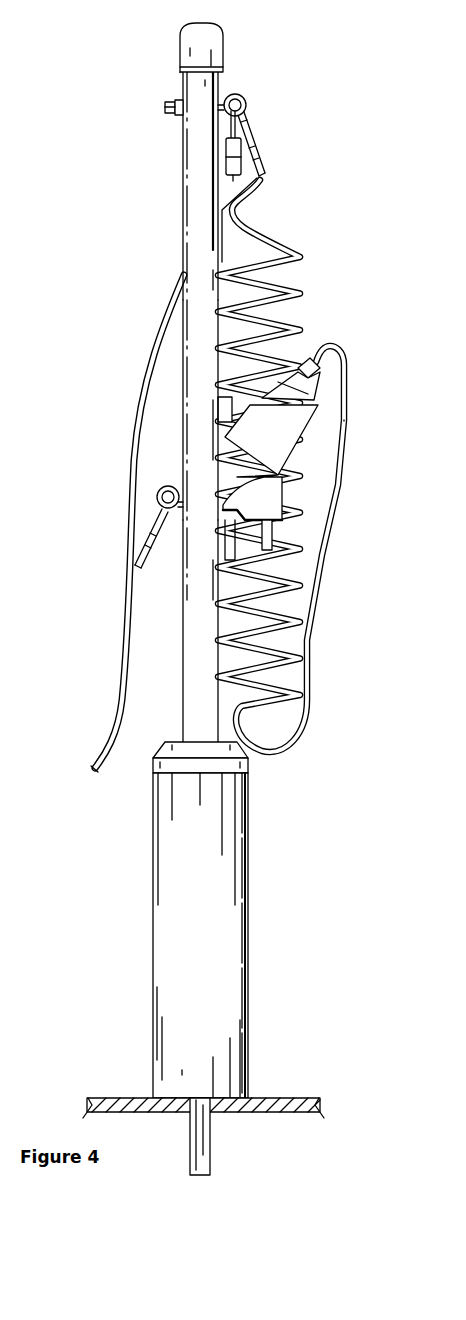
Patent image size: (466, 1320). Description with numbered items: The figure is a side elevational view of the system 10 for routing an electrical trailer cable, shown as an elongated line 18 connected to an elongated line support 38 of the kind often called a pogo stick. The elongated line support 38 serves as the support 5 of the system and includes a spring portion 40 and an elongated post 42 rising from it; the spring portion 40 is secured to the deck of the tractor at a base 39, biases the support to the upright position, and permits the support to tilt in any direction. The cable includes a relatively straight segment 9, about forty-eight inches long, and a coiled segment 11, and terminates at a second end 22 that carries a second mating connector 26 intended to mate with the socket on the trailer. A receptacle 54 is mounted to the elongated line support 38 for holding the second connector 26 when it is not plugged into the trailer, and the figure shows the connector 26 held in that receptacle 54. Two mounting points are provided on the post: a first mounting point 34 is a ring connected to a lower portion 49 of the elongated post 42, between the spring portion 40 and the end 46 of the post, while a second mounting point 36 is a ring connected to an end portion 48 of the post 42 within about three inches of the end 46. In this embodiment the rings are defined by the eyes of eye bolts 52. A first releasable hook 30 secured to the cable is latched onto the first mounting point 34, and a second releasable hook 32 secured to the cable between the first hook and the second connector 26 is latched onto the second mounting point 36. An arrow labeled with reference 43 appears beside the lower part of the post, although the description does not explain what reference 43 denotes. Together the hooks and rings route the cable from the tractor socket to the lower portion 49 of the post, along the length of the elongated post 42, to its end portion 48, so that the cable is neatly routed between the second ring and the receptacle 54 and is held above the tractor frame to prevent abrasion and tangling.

The system 10 is at (236, 17).
The relatively straight segment 9 is at (143, 372).
The elongated line 18 is at (300, 257).
The second end 22 is at (330, 350).
The coiled segment 11 is at (302, 547).
The second mating connector 26 is at (308, 388).
The receptacle 54 is at (275, 443).
The support 5 is at (364, 428).
The elongated line support 38 is at (197, 213).
The end portion 48 is at (195, 123).
The elongated post 42 is at (207, 320).
The lower portion 49 is at (195, 552).
The pole direction 43 is at (166, 618).
The end 46 is at (210, 47).
The eye bolts 52 is at (180, 105).
The second mounting point 36 is at (238, 93).
The second releasable hook 32 is at (257, 137).
The first mounting point 34 is at (170, 487).
The first releasable hook 30 is at (150, 527).
The spring portion 40 is at (215, 938).
The base 39 is at (207, 1090).